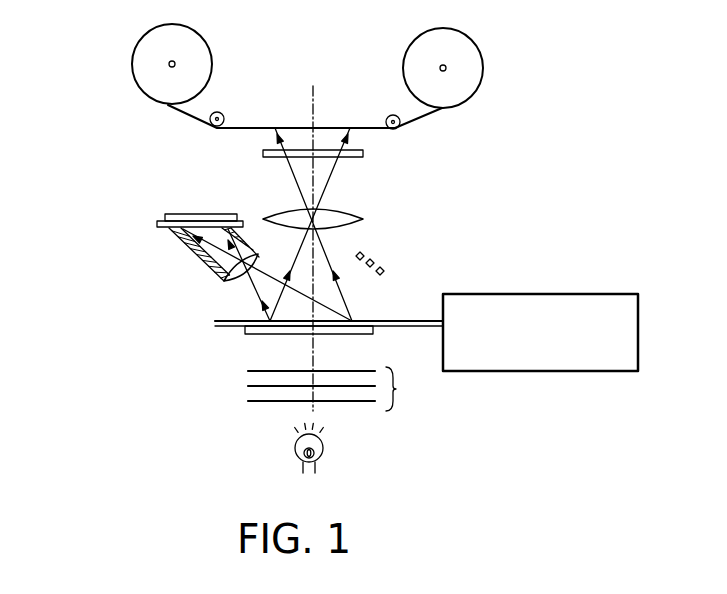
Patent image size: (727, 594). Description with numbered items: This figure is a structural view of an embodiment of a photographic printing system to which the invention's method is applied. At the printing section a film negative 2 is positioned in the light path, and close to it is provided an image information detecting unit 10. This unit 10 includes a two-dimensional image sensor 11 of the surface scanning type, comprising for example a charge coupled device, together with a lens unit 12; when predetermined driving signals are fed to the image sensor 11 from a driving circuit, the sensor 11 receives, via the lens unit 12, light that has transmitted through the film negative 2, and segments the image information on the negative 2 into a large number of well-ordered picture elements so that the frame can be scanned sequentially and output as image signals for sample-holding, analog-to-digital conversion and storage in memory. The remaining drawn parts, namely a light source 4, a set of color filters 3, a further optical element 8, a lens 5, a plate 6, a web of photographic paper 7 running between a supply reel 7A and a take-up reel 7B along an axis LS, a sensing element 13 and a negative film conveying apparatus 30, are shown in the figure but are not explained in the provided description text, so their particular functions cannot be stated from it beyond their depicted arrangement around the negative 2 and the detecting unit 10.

The supply reel 7A is at (211, 56).
The take-up reel 7B is at (482, 75).
The photographic paper 7 is at (244, 127).
The optical axis LS is at (316, 107).
The filter plate 6 is at (356, 157).
The printing lens 5 is at (360, 216).
The image sensor 13 is at (213, 212).
The lens unit 12 is at (252, 262).
The image sensor 11 is at (213, 232).
The image information detecting unit 10 is at (165, 291).
The shutter 8 is at (362, 237).
The film negative 2 is at (335, 320).
The color correction filters 3 is at (313, 385).
The light source lamp 4 is at (323, 447).
The negative film conveying apparatus 30 is at (535, 372).